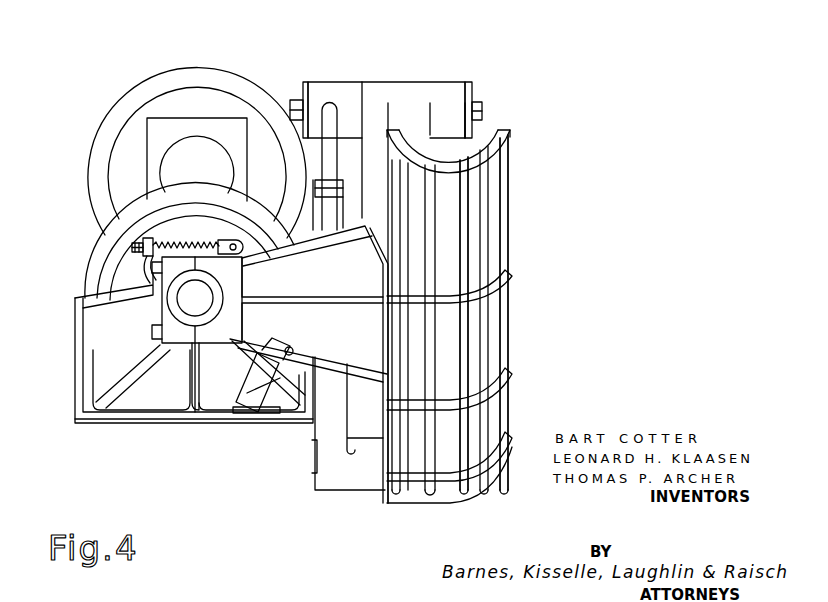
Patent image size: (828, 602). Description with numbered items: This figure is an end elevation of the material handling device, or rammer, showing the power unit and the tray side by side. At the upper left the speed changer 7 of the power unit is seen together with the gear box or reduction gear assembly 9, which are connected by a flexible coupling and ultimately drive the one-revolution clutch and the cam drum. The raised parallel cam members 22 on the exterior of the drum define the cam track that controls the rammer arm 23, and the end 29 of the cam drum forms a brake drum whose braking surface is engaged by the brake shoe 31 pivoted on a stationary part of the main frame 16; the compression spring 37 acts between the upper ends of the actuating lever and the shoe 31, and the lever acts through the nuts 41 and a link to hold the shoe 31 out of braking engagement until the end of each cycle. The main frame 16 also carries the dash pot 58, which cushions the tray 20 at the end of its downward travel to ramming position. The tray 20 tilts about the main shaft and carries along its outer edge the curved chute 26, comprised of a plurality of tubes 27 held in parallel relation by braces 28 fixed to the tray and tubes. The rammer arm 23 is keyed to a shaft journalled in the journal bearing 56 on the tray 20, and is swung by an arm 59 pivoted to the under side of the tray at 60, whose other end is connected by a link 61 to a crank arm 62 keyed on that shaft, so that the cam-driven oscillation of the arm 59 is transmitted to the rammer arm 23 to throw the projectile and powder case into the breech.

The speed changer 7 is at (203, 71).
The gear box or reduction gear assembly 9 is at (148, 120).
The crank arm 62 is at (320, 147).
The journal bearing 56 is at (405, 83).
The link 61 is at (365, 303).
The raised parallel cam members 22 is at (128, 211).
The nuts 41 is at (131, 246).
The compression spring 37 is at (185, 236).
The end of cam drum 29 is at (102, 266).
The brake shoe 31 is at (309, 364).
The main frame 16 is at (122, 407).
The dash pot 58 is at (270, 386).
The arm 59 is at (333, 440).
The pivot 60 is at (365, 478).
The tray 20 is at (382, 228).
The chute 26 is at (508, 212).
The tubes 27 is at (470, 338).
The braces 28 is at (505, 374).
The rammer arm 23 is at (450, 457).